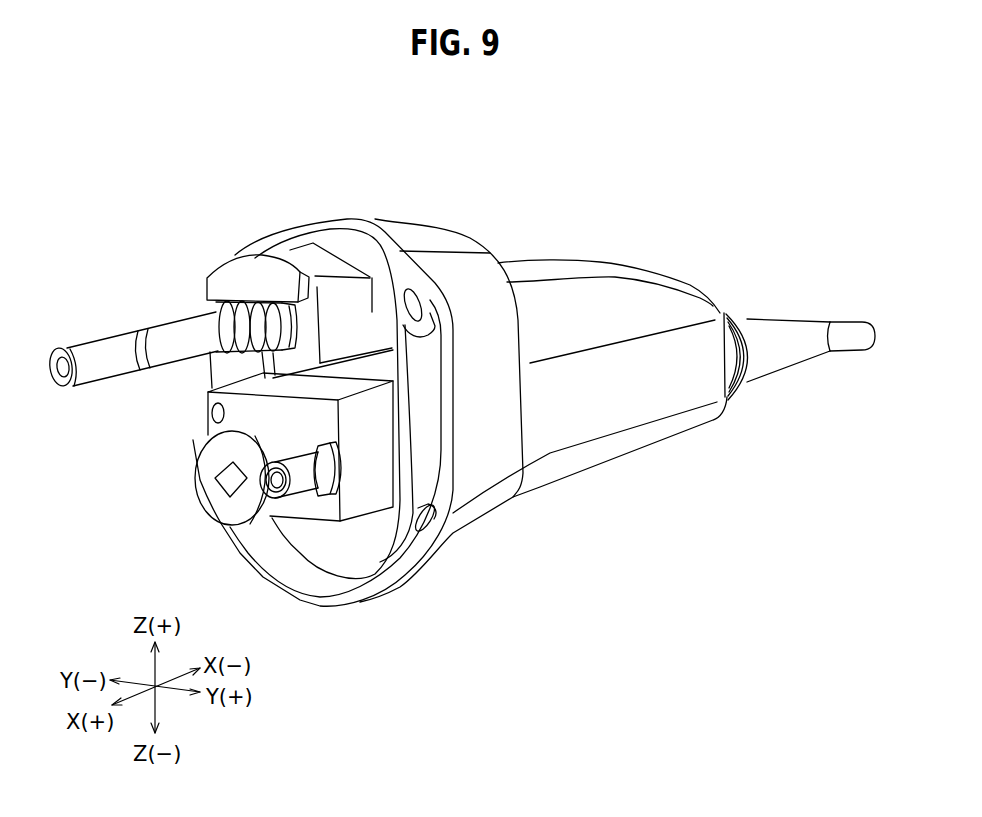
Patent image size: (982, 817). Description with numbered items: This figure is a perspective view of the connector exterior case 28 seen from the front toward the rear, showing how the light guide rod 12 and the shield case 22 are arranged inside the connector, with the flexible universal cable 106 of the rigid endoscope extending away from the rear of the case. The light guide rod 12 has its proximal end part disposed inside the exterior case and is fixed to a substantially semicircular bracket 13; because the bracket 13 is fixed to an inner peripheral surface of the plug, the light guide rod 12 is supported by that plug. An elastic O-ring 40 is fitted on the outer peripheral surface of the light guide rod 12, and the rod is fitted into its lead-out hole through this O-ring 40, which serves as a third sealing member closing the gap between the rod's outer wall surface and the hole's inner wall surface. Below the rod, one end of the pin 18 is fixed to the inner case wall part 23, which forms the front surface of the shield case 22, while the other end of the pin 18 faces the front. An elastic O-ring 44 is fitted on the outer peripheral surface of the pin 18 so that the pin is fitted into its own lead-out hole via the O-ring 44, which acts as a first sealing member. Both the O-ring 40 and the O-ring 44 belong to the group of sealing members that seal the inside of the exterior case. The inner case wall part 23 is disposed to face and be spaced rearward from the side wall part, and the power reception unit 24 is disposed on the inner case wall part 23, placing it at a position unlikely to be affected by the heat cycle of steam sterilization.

The light guide rod 12 is at (95, 348).
The bracket 13 is at (252, 278).
The pin 18 is at (307, 482).
The shield case 22 is at (367, 372).
The inner case wall part 23 is at (262, 413).
The power reception unit 24 is at (212, 490).
The connector exterior case 28 is at (584, 244).
The O-ring 40 is at (213, 310).
The O-ring 44 is at (308, 483).
The universal cable 106 is at (853, 332).